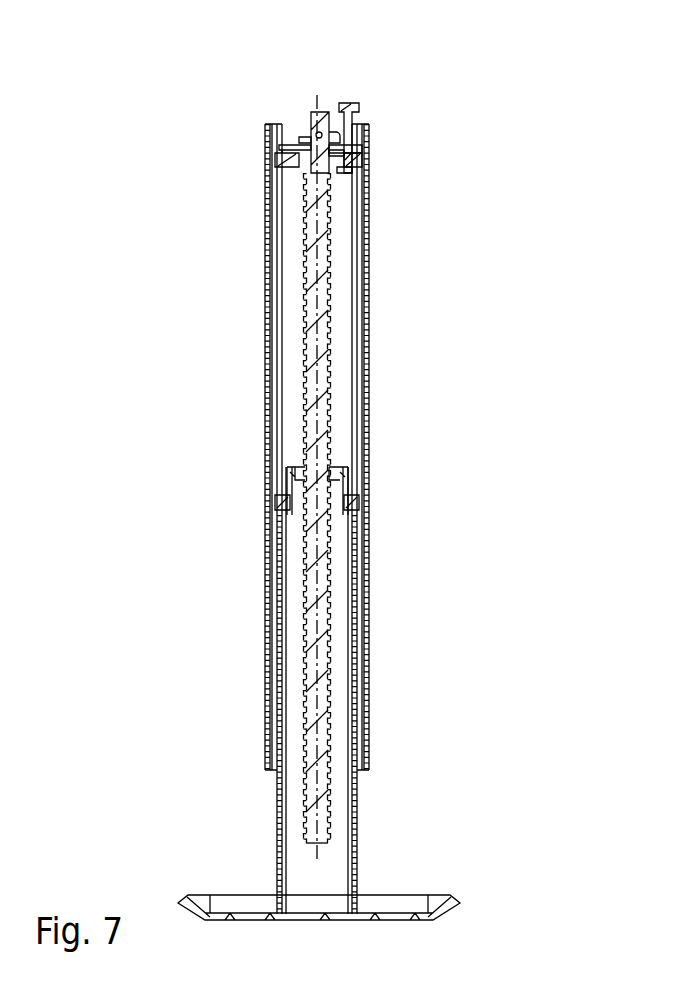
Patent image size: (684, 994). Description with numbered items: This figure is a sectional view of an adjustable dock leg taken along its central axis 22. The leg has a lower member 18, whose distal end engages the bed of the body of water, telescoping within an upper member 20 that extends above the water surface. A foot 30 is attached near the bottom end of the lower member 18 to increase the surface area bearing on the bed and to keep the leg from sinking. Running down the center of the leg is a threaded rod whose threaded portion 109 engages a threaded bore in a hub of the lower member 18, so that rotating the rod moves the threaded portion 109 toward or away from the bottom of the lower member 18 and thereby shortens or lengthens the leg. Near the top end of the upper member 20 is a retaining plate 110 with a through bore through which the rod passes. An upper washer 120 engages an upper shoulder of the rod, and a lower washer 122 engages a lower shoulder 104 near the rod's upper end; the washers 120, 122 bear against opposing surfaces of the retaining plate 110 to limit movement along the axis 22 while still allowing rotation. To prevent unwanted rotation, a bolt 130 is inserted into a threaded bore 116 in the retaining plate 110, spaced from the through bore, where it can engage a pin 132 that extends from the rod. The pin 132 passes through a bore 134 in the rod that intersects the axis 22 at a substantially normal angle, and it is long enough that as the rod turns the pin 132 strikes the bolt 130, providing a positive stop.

The lower member 18 is at (272, 843).
The upper member 20 is at (268, 392).
The central axis 22 is at (318, 852).
The foot 30 is at (240, 908).
The lower shoulder 104 is at (312, 112).
The threaded portion 109 is at (332, 620).
The retaining plate 110 is at (360, 158).
The threaded bore 116 is at (357, 150).
The upper washer 120 is at (337, 172).
The lower washer 122 is at (272, 167).
The bolt 130 is at (356, 104).
The pin 132 is at (300, 141).
The bore 134 is at (330, 136).